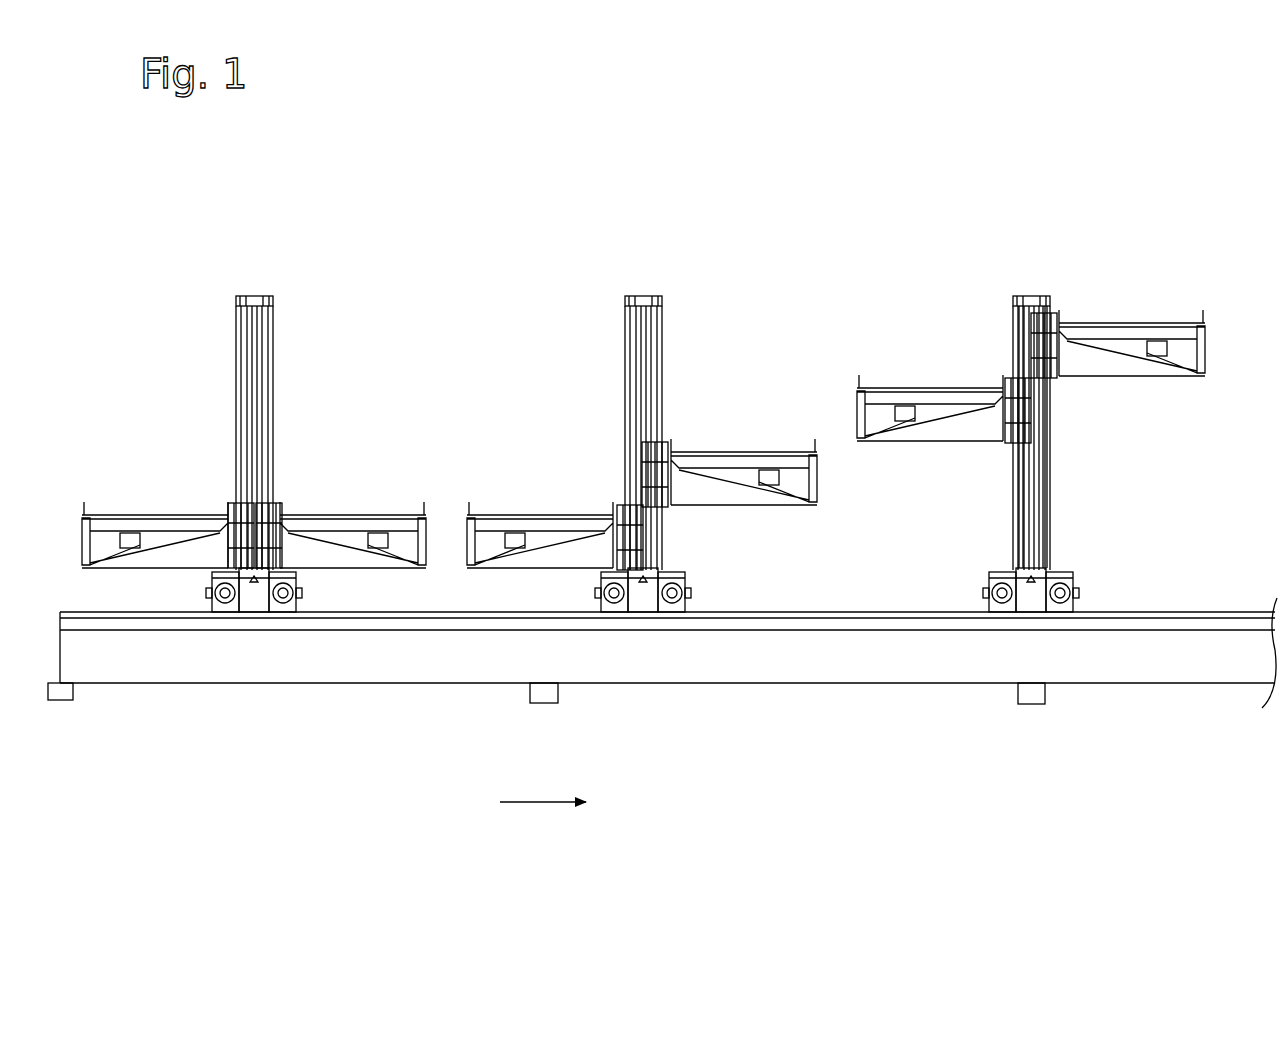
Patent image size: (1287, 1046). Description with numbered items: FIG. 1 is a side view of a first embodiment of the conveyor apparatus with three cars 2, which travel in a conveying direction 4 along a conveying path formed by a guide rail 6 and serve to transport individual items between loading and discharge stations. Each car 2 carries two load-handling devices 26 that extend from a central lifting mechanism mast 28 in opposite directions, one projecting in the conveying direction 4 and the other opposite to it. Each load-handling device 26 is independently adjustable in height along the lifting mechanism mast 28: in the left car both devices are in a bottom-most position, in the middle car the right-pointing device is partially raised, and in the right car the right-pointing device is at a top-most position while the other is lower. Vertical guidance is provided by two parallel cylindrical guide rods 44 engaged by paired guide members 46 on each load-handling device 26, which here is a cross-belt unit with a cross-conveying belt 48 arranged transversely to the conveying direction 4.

The car 2 is at (310, 300).
The conveying direction 4 is at (543, 802).
The guide rail 6 is at (700, 672).
The load-handling device 26 is at (643, 430).
The lifting mechanism mast 28 is at (245, 282).
The guide rod 44 is at (1045, 460).
The guide member 46 is at (1012, 390).
The cross-conveying belt 48 is at (152, 512).